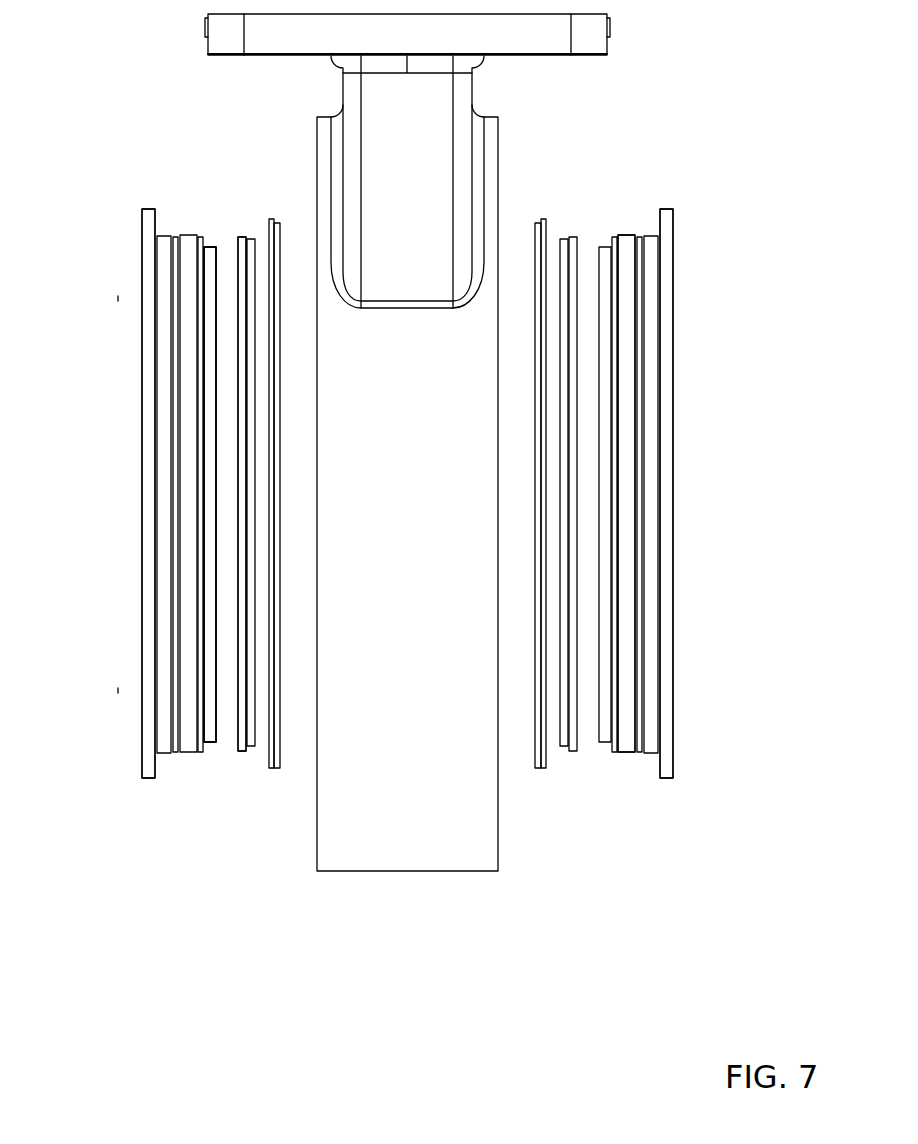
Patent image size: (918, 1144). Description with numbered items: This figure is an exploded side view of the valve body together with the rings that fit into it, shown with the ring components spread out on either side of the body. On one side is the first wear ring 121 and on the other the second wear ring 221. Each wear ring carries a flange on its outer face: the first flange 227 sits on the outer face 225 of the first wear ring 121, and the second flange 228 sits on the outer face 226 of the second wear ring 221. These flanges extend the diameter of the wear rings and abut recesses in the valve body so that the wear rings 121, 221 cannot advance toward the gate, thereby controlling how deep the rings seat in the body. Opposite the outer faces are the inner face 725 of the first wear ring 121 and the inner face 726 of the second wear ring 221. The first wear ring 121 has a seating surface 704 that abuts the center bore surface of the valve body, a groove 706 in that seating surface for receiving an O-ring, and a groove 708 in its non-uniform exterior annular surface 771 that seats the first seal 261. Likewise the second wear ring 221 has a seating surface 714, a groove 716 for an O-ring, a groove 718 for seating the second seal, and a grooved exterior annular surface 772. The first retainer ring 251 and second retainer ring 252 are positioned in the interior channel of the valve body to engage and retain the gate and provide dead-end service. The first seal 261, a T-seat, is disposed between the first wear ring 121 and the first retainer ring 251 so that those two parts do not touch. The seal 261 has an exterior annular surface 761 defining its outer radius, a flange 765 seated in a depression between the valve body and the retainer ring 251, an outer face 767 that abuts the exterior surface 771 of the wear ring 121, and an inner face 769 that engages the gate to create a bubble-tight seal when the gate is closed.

The first wear ring 121 is at (143, 353).
The second wear ring 221 is at (668, 315).
The outer face of first wear ring 225 is at (122, 613).
The outer face of second wear ring 226 is at (686, 680).
The first flange 227 is at (143, 262).
The second flange 228 is at (667, 766).
The first retainer ring 251 is at (273, 410).
The second retainer ring 252 is at (538, 413).
The first seal 261 is at (305, 471).
The seating surface 704 is at (165, 236).
The groove 706 is at (175, 238).
The groove 708 is at (207, 246).
The seating surface 714 is at (620, 235).
The groove 716 is at (640, 237).
The groove 718 is at (607, 246).
The inner face of first wear ring 725 is at (220, 743).
The inner face of second wear ring 726 is at (597, 735).
The exterior annular surface of seal 761 is at (249, 750).
The flange of seal 765 is at (242, 237).
The outer face of seal 767 is at (224, 672).
The inner face of seal 769 is at (258, 667).
The exterior annular surface of first wear ring 771 is at (175, 753).
The exterior annular surface of second wear ring 772 is at (627, 753).